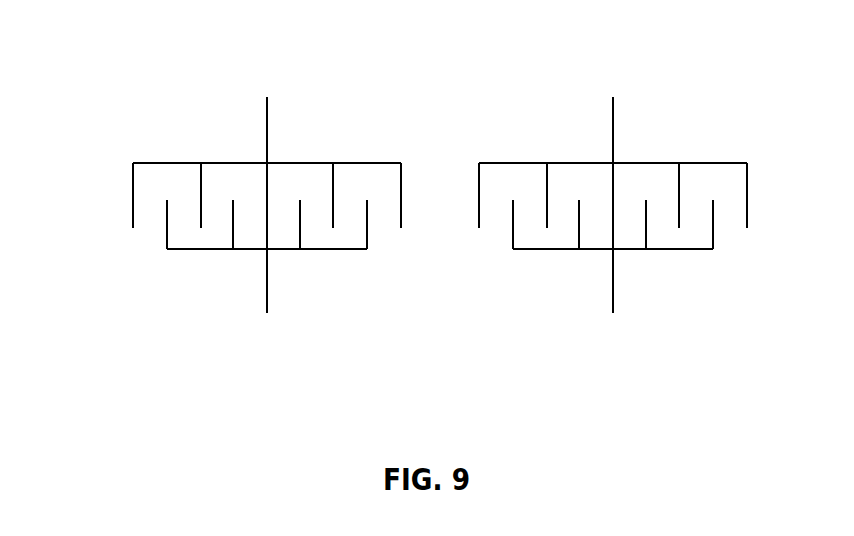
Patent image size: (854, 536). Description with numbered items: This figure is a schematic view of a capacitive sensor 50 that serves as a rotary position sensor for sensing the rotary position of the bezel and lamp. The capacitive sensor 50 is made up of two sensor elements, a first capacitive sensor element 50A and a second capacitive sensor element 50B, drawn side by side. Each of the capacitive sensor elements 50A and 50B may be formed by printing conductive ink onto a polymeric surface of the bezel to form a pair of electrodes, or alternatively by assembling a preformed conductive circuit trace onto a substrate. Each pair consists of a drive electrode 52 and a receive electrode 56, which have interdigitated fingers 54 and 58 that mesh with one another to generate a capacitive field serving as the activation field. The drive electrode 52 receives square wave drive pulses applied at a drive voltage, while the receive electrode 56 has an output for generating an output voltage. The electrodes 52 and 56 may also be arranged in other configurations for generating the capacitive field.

The capacitive sensor 50 is at (155, 78).
The first capacitive sensor element 50A is at (322, 148).
The second capacitive sensor element 50B is at (668, 148).
The drive electrode 52 is at (155, 162).
The interdigitated fingers 54 is at (133, 183).
The receive electrode 56 is at (208, 249).
The interdigitated fingers 58 is at (300, 233).